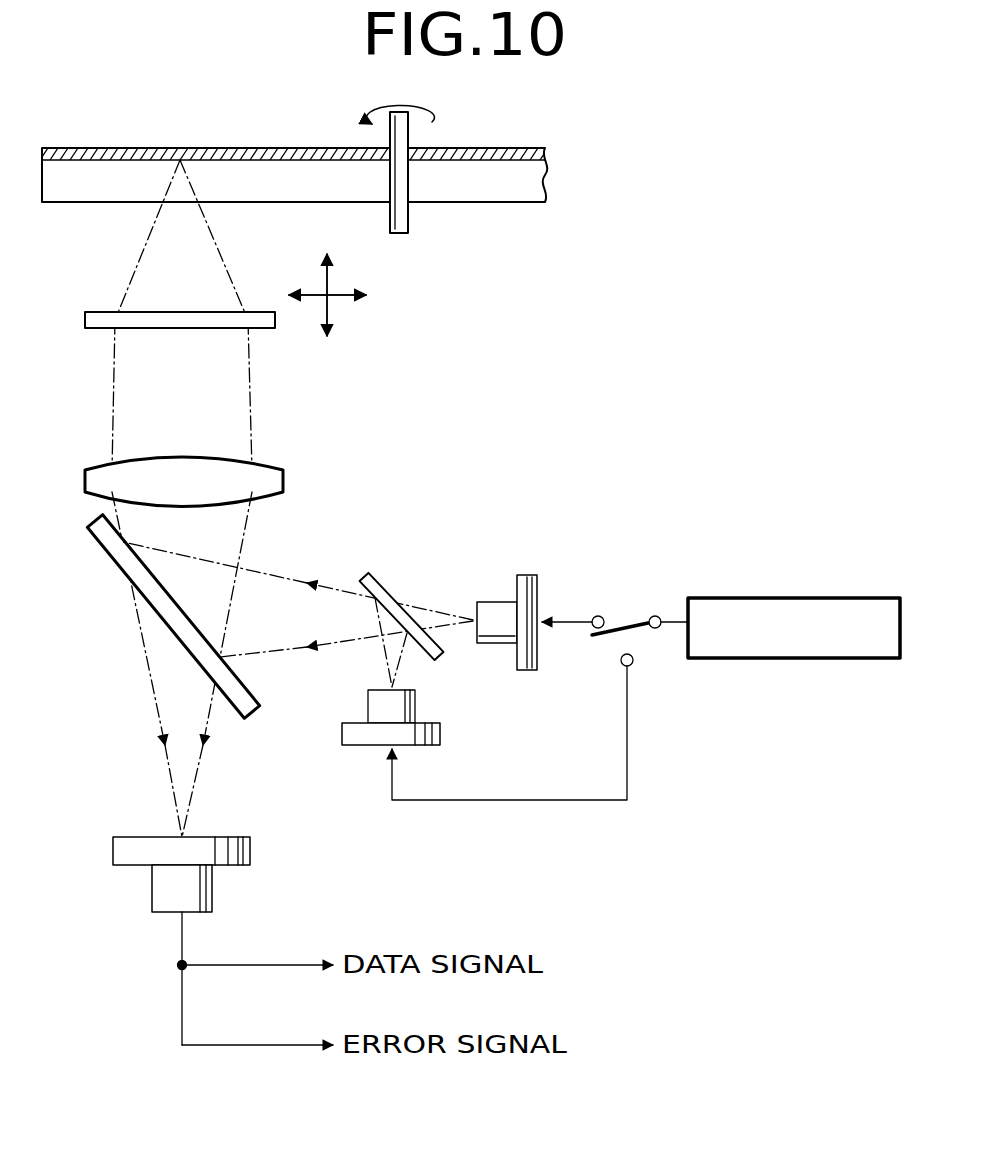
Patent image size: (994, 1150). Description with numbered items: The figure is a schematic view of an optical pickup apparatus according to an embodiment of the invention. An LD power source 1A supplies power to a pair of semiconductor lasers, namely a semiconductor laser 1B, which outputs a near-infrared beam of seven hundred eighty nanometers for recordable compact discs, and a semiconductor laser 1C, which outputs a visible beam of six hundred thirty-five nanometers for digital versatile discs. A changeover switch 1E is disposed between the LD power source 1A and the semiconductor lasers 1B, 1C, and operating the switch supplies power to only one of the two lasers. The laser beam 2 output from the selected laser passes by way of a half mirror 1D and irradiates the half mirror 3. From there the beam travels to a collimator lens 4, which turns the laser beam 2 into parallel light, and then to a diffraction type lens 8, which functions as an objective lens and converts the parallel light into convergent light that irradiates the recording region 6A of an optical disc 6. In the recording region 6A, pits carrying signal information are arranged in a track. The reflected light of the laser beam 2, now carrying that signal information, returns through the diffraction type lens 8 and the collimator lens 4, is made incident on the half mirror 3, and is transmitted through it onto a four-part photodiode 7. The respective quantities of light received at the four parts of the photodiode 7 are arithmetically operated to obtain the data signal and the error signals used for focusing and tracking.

The LD power source 1A is at (797, 598).
The semiconductor laser 1B is at (490, 602).
The semiconductor laser 1C is at (415, 705).
The half mirror 1D is at (382, 582).
The changeover switch 1E is at (627, 624).
The laser beam 2 is at (275, 565).
The half mirror 3 is at (107, 540).
The collimator lens 4 is at (100, 472).
The optical disc 6 is at (97, 188).
The recording region 6A is at (127, 152).
The four-part photodiode 7 is at (113, 848).
The diffraction type lens 8 is at (91, 312).